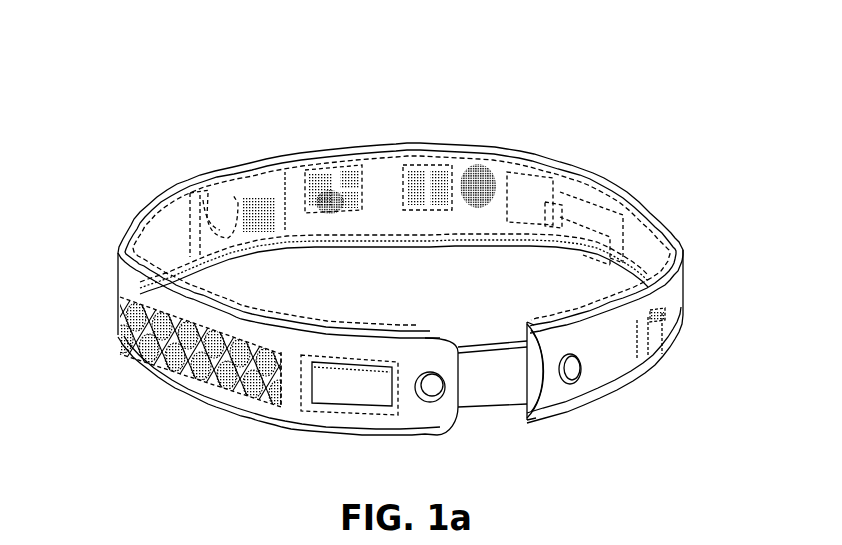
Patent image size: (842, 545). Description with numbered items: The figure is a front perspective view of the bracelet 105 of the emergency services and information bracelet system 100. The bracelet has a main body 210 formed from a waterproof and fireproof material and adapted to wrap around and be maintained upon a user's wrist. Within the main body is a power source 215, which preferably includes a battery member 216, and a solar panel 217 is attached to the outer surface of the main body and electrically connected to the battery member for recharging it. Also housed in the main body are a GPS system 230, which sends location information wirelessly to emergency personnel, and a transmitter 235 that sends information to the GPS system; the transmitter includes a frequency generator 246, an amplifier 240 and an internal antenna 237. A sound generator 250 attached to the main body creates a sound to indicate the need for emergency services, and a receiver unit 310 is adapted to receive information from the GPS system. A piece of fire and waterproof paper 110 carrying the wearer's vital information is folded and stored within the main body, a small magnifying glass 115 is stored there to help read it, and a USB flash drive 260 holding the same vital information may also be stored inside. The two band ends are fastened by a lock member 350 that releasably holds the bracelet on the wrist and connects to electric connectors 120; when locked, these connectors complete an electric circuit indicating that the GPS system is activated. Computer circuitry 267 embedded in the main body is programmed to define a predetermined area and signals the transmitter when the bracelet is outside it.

The emergency services and information bracelet system 100 is at (210, 112).
The bracelet 105 is at (637, 122).
The fire and waterproof paper 110 is at (535, 382).
The magnifying glass 115 is at (320, 385).
The electric connectors 120 is at (433, 392).
The main body 210 is at (686, 278).
The power source 215 is at (214, 222).
The battery member 216 is at (233, 207).
The solar panel 217 is at (126, 300).
The GPS system 230 is at (533, 197).
The transmitter 235 is at (332, 173).
The internal antenna 237 is at (587, 254).
The amplifier 240 is at (412, 165).
The frequency generator 246 is at (340, 198).
The sound generator 250 is at (470, 167).
The USB flash drive 260 is at (654, 332).
The computer circuitry 267 is at (337, 208).
The receiver unit 310 is at (313, 202).
The lock member 350 is at (478, 343).